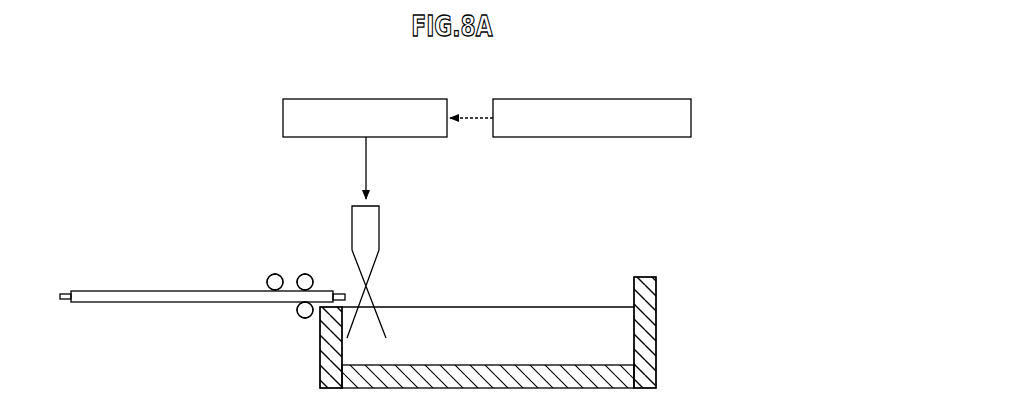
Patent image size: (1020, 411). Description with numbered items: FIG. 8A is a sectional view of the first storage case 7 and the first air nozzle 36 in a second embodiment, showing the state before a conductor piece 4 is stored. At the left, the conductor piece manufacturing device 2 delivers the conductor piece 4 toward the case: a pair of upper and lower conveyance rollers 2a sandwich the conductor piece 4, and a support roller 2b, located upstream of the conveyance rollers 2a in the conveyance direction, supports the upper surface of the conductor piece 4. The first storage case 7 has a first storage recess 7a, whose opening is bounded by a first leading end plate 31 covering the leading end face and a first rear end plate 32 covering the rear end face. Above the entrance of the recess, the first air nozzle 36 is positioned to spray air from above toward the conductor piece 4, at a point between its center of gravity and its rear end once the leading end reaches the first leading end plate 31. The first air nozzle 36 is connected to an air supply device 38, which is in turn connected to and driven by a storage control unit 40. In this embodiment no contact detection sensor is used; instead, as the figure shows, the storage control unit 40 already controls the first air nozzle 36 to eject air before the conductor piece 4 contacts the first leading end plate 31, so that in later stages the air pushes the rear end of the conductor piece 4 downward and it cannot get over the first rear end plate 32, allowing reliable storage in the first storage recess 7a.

The conductor piece manufacturing device 2 is at (285, 262).
The conveyance rollers 2a is at (313, 281).
The support roller 2b is at (267, 283).
The conductor piece 4 is at (168, 291).
The first storage case 7 is at (569, 304).
The first storage recess 7a is at (497, 320).
The first leading end plate 31 is at (641, 282).
The first rear end plate 32 is at (330, 348).
The first air nozzle 36 is at (352, 229).
The air supply device 38 is at (366, 99).
The storage control unit 40 is at (593, 99).